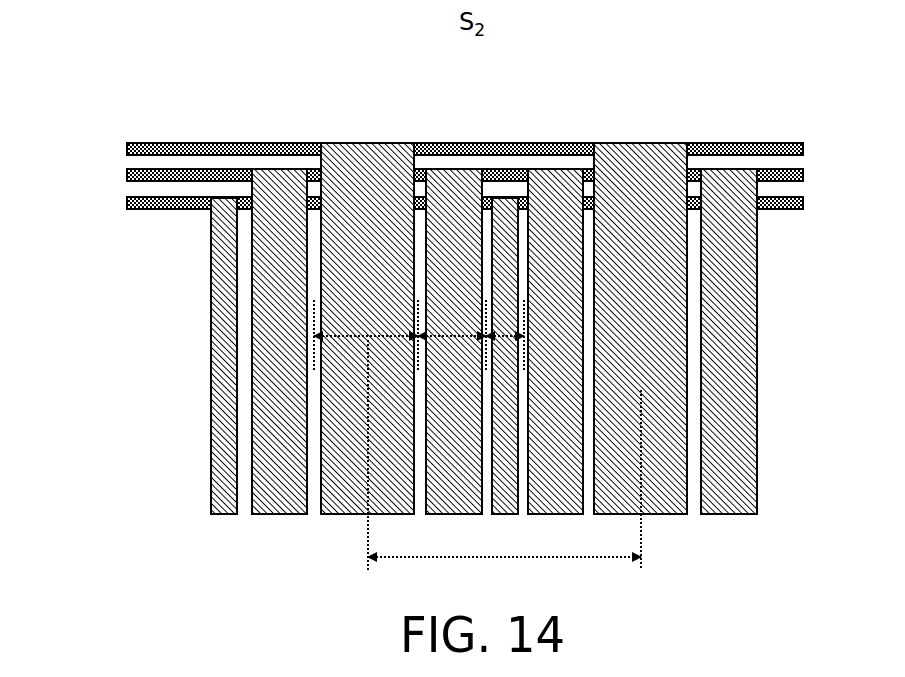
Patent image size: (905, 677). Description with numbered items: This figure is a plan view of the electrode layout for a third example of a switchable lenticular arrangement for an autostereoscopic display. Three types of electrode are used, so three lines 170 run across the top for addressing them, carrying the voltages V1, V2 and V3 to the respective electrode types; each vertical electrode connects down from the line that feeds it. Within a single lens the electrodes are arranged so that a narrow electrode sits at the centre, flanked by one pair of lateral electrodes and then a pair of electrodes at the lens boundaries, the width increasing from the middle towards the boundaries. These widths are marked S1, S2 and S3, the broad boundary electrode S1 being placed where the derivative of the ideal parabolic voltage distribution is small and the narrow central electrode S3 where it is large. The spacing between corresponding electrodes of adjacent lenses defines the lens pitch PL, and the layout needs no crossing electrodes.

The lines for addressing 170 is at (465, 177).
The voltage applied to electrode V1 is at (127, 147).
The voltage applied to electrode V2 is at (127, 175).
The voltage applied to electrode V3 is at (127, 204).
The width of electrode S1 is at (366, 332).
The width of electrode S2 is at (452, 332).
The width of electrode S3 is at (503, 335).
The pitch of the lenses PL is at (504, 455).